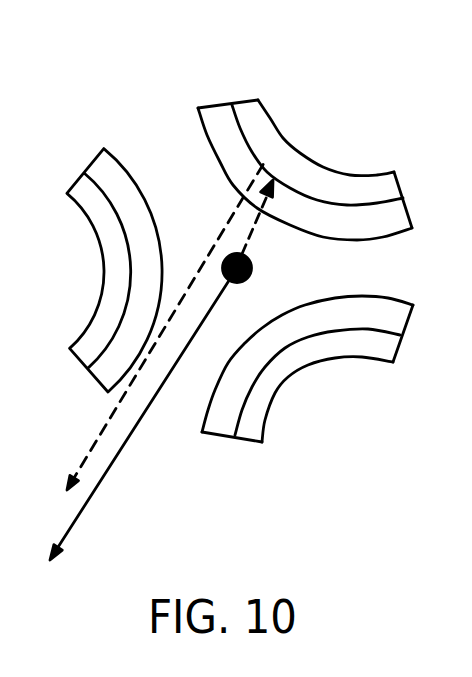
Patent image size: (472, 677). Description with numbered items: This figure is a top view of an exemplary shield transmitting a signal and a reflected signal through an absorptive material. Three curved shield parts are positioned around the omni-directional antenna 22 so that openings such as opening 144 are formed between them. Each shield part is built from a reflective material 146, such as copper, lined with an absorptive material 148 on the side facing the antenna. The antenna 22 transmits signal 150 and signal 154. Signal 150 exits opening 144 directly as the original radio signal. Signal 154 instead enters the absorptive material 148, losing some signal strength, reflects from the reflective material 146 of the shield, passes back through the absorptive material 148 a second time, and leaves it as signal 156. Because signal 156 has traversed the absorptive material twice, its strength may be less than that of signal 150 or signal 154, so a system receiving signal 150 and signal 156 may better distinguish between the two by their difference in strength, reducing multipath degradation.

The omni-directional antenna 22 is at (252, 265).
The opening 144 is at (167, 425).
The reflective material 146 is at (272, 115).
The absorptive material 148 is at (216, 100).
The signal 150 is at (117, 459).
The signal 154 is at (253, 226).
The signal 156 is at (97, 444).